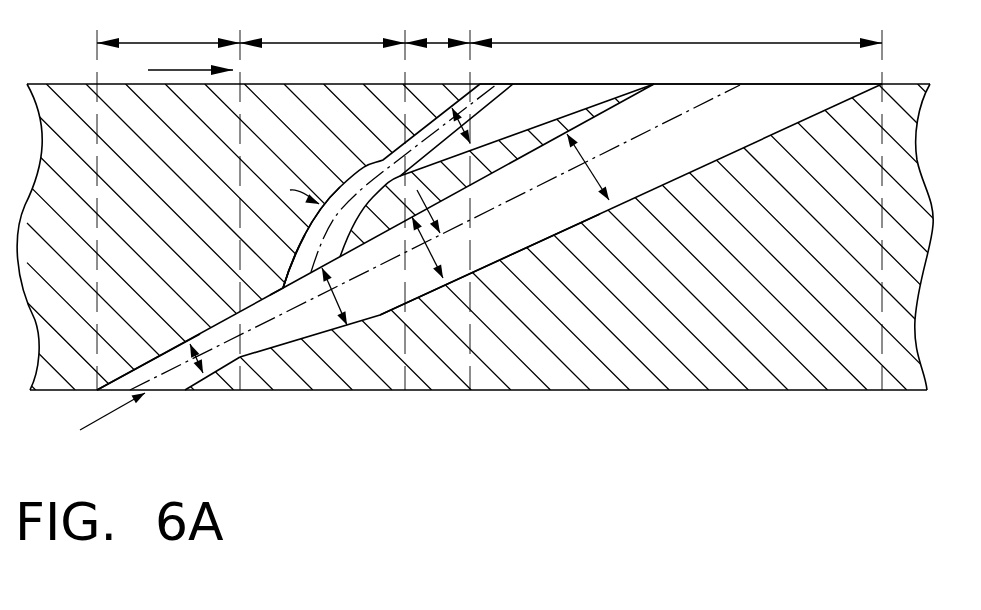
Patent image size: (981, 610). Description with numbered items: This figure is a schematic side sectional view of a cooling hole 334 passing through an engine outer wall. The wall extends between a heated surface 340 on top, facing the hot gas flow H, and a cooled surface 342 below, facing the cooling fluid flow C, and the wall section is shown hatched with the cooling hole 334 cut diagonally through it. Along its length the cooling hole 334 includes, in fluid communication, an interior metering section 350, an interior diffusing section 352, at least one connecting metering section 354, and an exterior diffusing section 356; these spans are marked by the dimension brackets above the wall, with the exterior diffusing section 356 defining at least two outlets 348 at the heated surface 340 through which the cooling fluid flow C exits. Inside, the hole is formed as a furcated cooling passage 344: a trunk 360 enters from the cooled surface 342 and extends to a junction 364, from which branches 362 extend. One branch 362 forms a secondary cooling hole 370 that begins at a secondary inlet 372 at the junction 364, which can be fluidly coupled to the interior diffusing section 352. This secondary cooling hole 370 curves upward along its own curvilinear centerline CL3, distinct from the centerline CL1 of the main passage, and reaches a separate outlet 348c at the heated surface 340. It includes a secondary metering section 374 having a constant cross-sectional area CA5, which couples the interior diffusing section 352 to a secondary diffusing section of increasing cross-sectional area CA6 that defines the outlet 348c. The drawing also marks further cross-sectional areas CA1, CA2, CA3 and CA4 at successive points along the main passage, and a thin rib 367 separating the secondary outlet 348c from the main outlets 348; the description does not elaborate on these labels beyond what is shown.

The cooling hole 334 is at (672, 160).
The hot surface of wall 340 is at (312, 84).
The cold surface of wall 342 is at (557, 392).
The furcated cooling passage 344 is at (300, 392).
The outlets 348 is at (762, 84).
The outlet 348c is at (541, 84).
The interior metering section 350 is at (157, 43).
The interior diffusing section 352 is at (315, 43).
The connecting metering section 354 is at (440, 43).
The exterior diffusing section 356 is at (635, 43).
The trunk 360 is at (233, 327).
The branch 362 is at (442, 192).
The junction 364 is at (383, 313).
The splitter rib 367 is at (462, 182).
The secondary cooling hole 370 is at (387, 170).
The secondary inlet 372 is at (298, 287).
The secondary metering section 374 is at (295, 236).
The angle CA1 is at (185, 362).
The angle CA2 is at (325, 322).
The angle CA3 is at (418, 268).
The angle CA4 is at (612, 200).
The constant cross-sectional area CA5 is at (290, 190).
The increasing cross-sectional area CA6 is at (470, 122).
The centerline of main passage CL1 is at (556, 212).
The curvilinear centerline CL3 is at (440, 122).
The hot gas flow H is at (177, 68).
The cooling fluid flow C is at (95, 425).